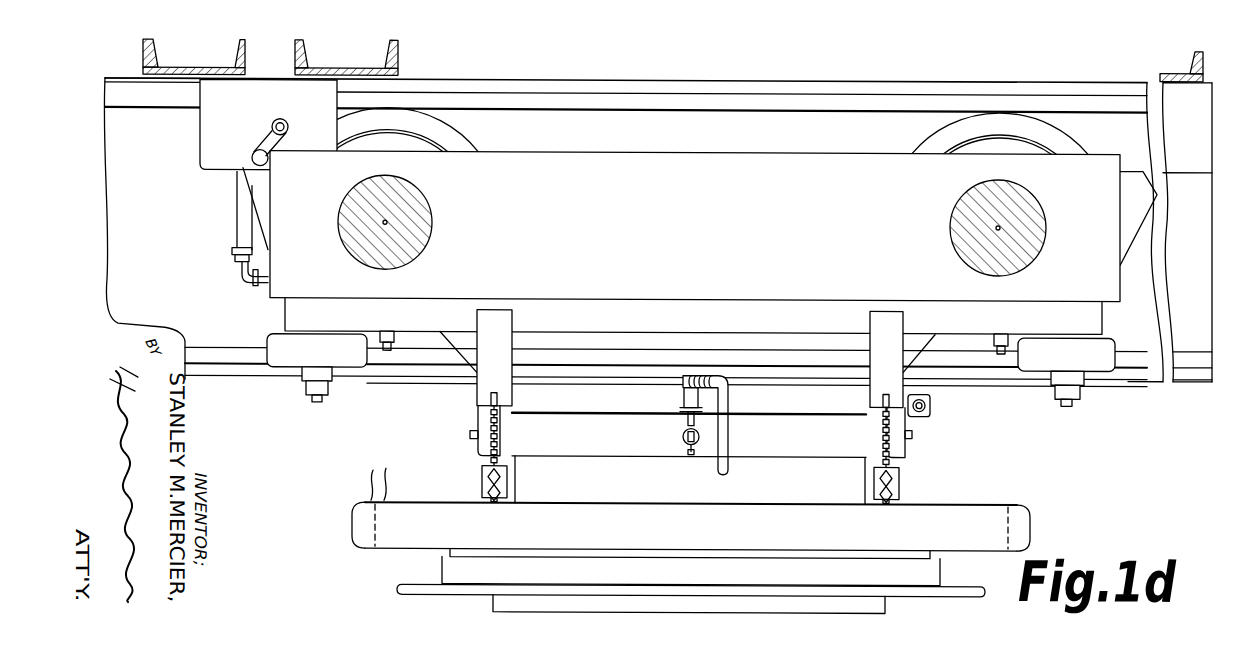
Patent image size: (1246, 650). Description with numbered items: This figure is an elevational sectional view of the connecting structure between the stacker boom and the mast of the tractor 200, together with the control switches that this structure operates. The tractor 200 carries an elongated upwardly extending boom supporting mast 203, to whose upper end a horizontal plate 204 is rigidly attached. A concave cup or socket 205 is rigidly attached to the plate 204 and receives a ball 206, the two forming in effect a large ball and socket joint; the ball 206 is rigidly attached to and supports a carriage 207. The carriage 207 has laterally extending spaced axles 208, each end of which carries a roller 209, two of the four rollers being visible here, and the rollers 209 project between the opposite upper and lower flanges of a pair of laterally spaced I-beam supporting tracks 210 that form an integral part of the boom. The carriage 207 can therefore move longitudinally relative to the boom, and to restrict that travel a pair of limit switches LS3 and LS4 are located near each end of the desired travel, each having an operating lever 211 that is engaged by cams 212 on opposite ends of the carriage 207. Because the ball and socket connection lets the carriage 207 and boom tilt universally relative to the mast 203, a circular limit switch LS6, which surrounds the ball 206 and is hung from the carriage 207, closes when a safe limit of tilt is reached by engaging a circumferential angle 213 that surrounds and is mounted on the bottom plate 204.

The tractor 200 is at (282, 40).
The boom supporting mast 203 is at (493, 601).
The horizontal plate 204 is at (447, 553).
The concave cup or socket 205 is at (468, 382).
The ball 206 is at (655, 352).
The carriage 207 is at (792, 185).
The axle 208 is at (418, 217).
The roller 209 is at (413, 125).
The supporting track 210 is at (738, 86).
The operating lever 211 is at (266, 138).
The cam 212 is at (242, 190).
The circumferential angle 213 is at (397, 584).
The limit switch LS3 is at (265, 88).
The limit switch LS4 is at (1180, 97).
The circular limit switch LS6 is at (366, 522).